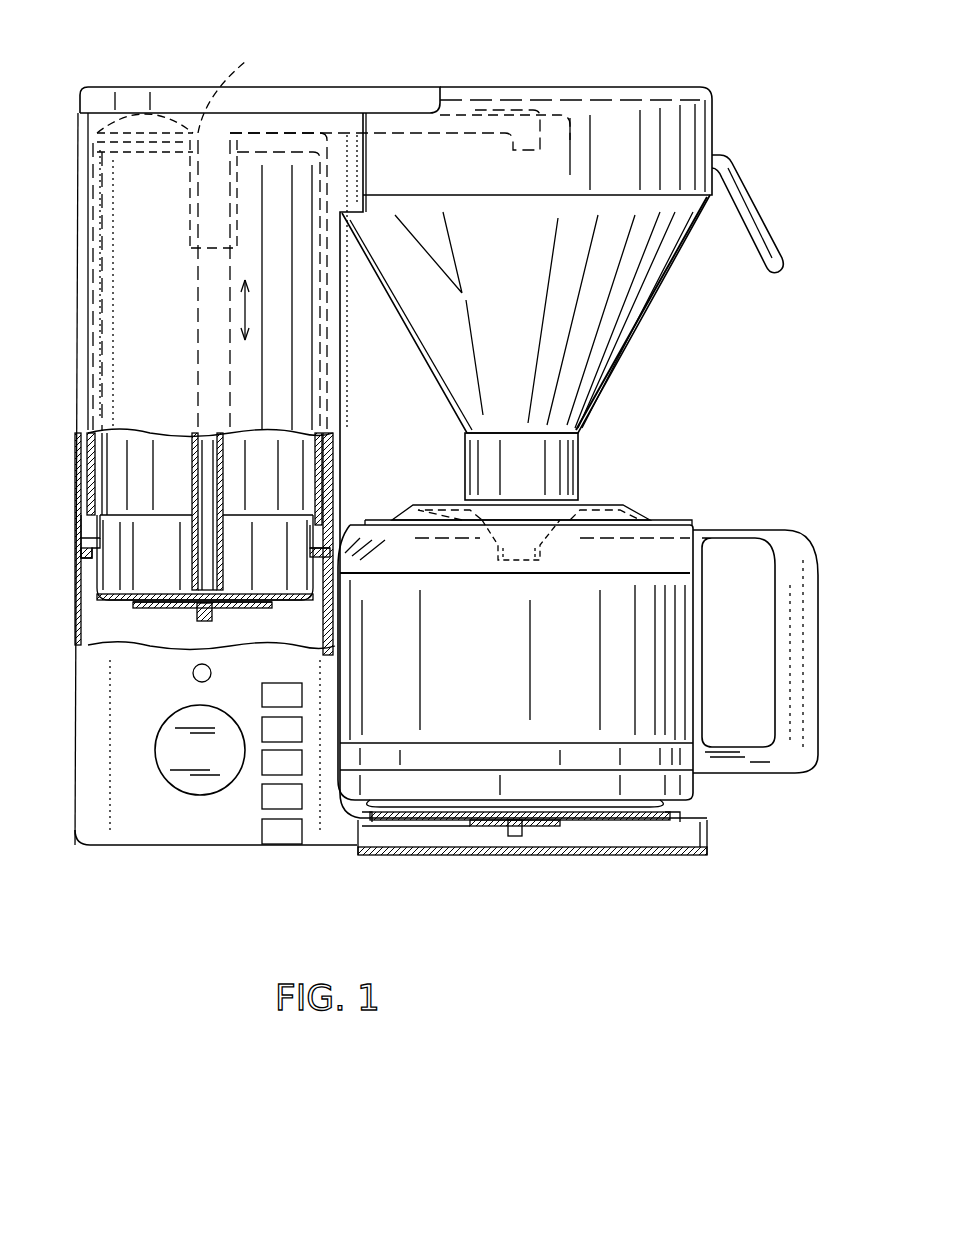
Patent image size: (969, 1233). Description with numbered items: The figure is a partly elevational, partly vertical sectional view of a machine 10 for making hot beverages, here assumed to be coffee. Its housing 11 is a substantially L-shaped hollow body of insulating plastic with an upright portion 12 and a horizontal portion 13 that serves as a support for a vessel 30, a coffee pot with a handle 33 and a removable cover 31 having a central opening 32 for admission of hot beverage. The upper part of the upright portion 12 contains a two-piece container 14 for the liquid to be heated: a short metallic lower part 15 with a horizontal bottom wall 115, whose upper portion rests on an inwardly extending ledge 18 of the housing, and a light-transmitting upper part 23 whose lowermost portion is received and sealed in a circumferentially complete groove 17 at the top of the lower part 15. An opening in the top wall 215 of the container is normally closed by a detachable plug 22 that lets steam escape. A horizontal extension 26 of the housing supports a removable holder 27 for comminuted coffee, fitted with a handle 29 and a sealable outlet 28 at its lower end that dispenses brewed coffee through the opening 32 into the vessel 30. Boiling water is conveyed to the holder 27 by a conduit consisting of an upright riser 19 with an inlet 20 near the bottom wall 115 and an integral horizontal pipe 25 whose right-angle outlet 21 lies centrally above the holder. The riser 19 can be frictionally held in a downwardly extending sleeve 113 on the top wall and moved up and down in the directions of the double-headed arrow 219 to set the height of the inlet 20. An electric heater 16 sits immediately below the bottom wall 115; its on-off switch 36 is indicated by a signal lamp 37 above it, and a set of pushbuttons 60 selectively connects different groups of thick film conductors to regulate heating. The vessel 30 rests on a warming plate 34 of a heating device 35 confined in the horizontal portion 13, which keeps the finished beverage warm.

The machine 10 is at (362, 68).
The housing 11 is at (72, 318).
The upright portion 12 is at (75, 470).
The horizontal portion 13 is at (603, 855).
The container 14 is at (120, 445).
The lower part 15 is at (97, 575).
The electric heater 16 is at (155, 607).
The groove 17 is at (90, 530).
The ledge 18 is at (92, 556).
The riser 19 is at (225, 548).
The inlet 20 is at (212, 595).
The outlet 21 is at (540, 152).
The plug 22 is at (160, 125).
The upper part 23 is at (98, 270).
The pipe 25 is at (478, 125).
The extension 26 is at (600, 95).
The holder 27 is at (632, 340).
The outlet 28 is at (585, 453).
The handle 29 is at (758, 222).
The vessel 30 is at (695, 520).
The cover 31 is at (625, 510).
The opening 32 is at (520, 562).
The handle 33 is at (775, 775).
The warming plate 34 is at (672, 816).
The heating device 35 is at (548, 826).
The on-off switch 36 is at (180, 750).
The signal lamp 37 is at (193, 673).
The pushbuttons 60 is at (300, 730).
The sleeve 113 is at (198, 194).
The bottom wall 115 is at (136, 598).
The top wall 215 is at (230, 83).
The double-headed arrow 219 is at (247, 310).